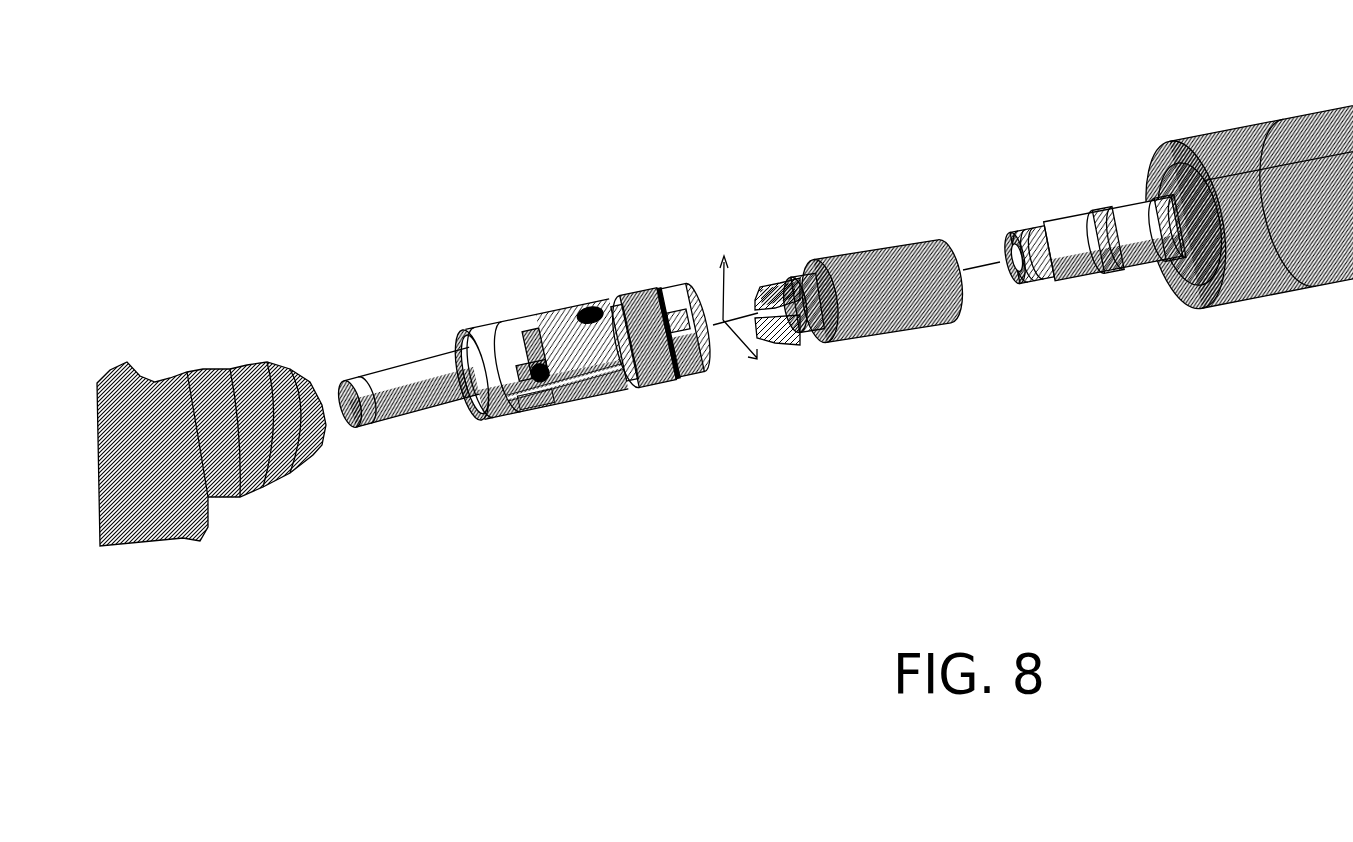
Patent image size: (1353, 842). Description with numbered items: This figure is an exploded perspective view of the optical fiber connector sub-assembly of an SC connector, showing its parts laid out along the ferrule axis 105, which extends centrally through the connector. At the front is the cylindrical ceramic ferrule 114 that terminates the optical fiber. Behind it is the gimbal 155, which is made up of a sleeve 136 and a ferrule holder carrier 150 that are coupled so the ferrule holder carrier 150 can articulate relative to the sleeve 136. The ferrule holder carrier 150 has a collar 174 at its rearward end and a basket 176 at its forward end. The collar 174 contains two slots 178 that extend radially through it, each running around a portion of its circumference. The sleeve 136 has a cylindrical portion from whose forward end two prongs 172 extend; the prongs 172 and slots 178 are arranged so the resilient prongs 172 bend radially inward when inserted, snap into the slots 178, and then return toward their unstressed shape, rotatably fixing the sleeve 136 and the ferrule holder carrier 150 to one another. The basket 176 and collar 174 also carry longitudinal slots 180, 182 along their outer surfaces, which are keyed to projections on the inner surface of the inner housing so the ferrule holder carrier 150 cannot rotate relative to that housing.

The ferrule axis 105 is at (977, 263).
The cylindrical ceramic ferrule 114 is at (397, 393).
The sleeve 136 is at (917, 327).
The ferrule holder carrier 150 is at (583, 307).
The gimbal 155 is at (720, 311).
The prongs 172 is at (767, 293).
The collar 174 is at (529, 357).
The basket 176 is at (490, 371).
The slots 178 is at (661, 334).
The longitudinal slot 180 is at (535, 399).
The longitudinal slot 182 is at (566, 382).